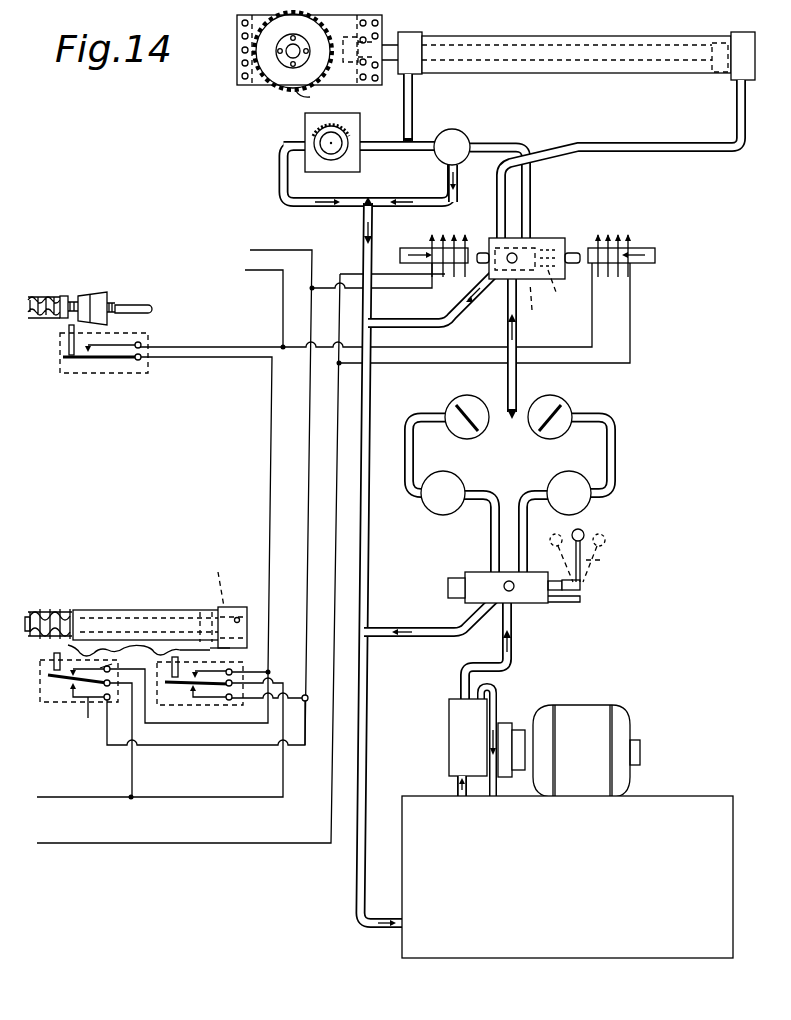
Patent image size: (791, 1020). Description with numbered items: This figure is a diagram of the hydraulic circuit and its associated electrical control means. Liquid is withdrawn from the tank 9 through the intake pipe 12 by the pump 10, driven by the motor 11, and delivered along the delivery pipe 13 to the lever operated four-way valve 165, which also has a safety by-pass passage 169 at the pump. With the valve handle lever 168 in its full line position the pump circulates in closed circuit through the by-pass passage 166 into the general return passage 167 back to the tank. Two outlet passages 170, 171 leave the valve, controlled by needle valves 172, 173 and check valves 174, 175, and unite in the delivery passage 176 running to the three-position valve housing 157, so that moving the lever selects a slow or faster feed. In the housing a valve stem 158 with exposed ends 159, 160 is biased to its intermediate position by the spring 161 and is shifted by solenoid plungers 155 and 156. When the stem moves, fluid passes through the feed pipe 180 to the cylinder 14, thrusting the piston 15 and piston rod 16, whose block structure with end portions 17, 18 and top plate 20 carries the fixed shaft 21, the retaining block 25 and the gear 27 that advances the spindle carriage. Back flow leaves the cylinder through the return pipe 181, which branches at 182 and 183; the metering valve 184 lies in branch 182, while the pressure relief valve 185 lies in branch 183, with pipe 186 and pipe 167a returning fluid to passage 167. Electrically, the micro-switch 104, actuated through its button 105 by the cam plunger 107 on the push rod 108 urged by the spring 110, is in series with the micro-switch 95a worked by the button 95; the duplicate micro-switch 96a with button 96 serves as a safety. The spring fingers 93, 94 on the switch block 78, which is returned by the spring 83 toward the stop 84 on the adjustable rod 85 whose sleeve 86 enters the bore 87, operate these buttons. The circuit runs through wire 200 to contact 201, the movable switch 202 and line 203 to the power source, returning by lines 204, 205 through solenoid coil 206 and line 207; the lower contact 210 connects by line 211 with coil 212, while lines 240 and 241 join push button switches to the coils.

The tank 9 is at (733, 838).
The pump 10 is at (449, 736).
The motor 11 is at (622, 730).
The pump intake pipe 12 is at (450, 784).
The delivery pipe 13 is at (463, 680).
The cylinder 14 is at (640, 42).
The piston 15 is at (719, 42).
The piston rod 16 is at (405, 32).
The end portion of block structure 17 is at (370, 86).
The end portion of block structure 18 is at (258, 86).
The top plate 20 is at (237, 77).
The fixed shaft 21 is at (293, 68).
The retaining block 25 is at (293, 34).
The gear 27 is at (315, 98).
The switch block 78 is at (128, 610).
The spring 83 is at (62, 614).
The stop 84 is at (235, 606).
The adjustable rod 85 is at (32, 611).
The sleeve 86 is at (208, 612).
The bore 87 is at (219, 588).
The spring finger end 93 is at (80, 647).
The spring finger end 94 is at (224, 651).
The spring button 95 is at (48, 665).
The micro-switch 95a is at (48, 712).
The second switch button 96 is at (175, 660).
The second micro-switch 96a is at (186, 702).
The micro-switch 104 is at (77, 374).
The projecting button 105 is at (68, 350).
The cam plunger 107 is at (103, 296).
The push rod 108 is at (142, 308).
The spring 110 is at (46, 295).
The solenoid plunger 155 is at (407, 248).
The solenoid plunger 156 is at (655, 255).
The valve housing 157 is at (543, 240).
The valve stem 158 is at (603, 562).
The exposed end of valve stem 159 is at (478, 252).
The exposed end of valve stem 160 is at (575, 252).
The spring 161 is at (566, 291).
The four-way valve 165 is at (533, 604).
The by-pass passage 166 is at (395, 628).
The return passage 167 is at (373, 540).
The pipe 167a is at (440, 294).
The valve handle lever 168 is at (585, 535).
The safety by-pass passage 169 is at (500, 718).
The outlet passage 170 is at (489, 542).
The outlet passage 171 is at (527, 498).
The needle valve 172 is at (452, 476).
The needle valve 173 is at (572, 477).
The check valve 174 is at (457, 404).
The check valve 175 is at (561, 404).
The delivery passage 176 is at (518, 340).
The feed pipe 180 is at (607, 143).
The return pipe 181 is at (413, 101).
The branch 182 is at (278, 188).
The branch 183 is at (519, 145).
The metering valve 184 is at (305, 136).
The pressure relief valve 185 is at (462, 135).
The pipe 186 is at (456, 192).
The wire 200 is at (270, 481).
The contact 201 is at (119, 657).
The movable switch 202 is at (66, 685).
The line 203 is at (132, 769).
The line 204 is at (350, 274).
The line 205 is at (630, 331).
The solenoid coil 206 is at (612, 240).
The line 207 is at (205, 343).
The lower contact 210 is at (88, 713).
The line 211 is at (414, 297).
The solenoid coil 212 is at (436, 238).
The line 240 is at (268, 250).
The conductive line 241 is at (283, 291).